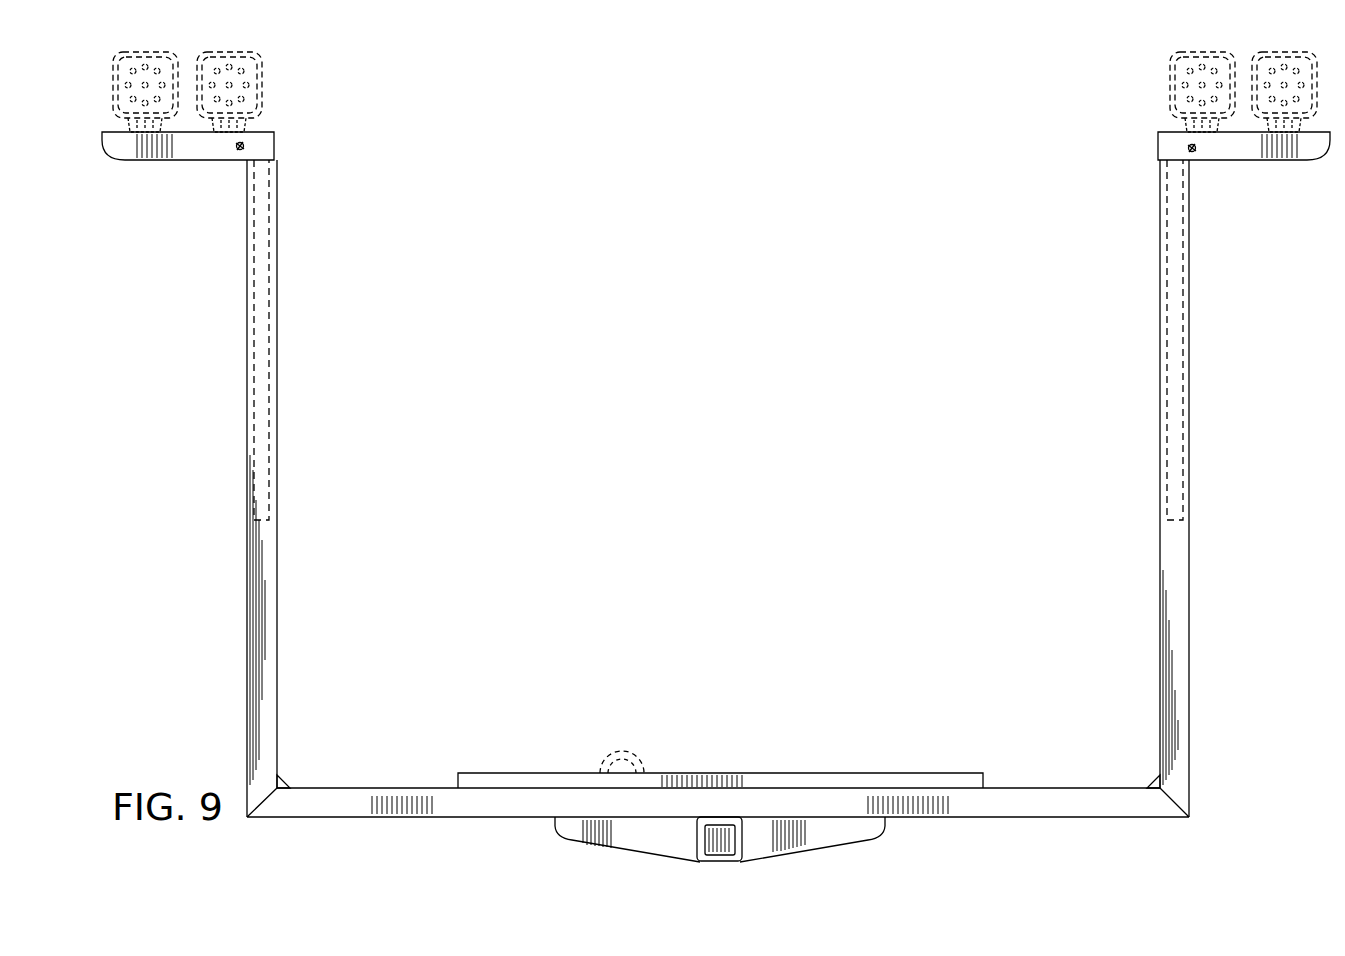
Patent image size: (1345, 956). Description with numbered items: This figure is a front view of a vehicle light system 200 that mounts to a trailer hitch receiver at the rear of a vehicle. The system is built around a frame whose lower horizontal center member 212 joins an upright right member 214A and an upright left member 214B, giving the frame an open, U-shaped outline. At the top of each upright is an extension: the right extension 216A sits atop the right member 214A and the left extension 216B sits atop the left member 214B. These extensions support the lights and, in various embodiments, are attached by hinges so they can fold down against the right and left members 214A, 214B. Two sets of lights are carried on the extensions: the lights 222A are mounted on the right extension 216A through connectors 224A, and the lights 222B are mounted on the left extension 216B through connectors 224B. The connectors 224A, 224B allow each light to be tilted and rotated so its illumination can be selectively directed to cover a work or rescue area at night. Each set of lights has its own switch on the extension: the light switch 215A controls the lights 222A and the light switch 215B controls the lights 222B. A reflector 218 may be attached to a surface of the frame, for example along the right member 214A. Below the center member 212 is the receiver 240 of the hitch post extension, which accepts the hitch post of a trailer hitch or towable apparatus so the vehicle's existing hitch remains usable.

The vehicle light system 200 is at (658, 94).
The center member 212 is at (1033, 800).
The right member 214A is at (1172, 643).
The left member 214B is at (278, 663).
The light switch 215A is at (1189, 146).
The light switch 215B is at (244, 148).
The right extension 216A is at (1258, 148).
The left extension 216B is at (158, 160).
The reflector 218 is at (1172, 390).
The first set of lights 222A is at (1124, 63).
The second set of lights 222B is at (276, 60).
The connector 224A is at (1175, 123).
The connector 224B is at (254, 122).
The receiver 240 is at (713, 830).